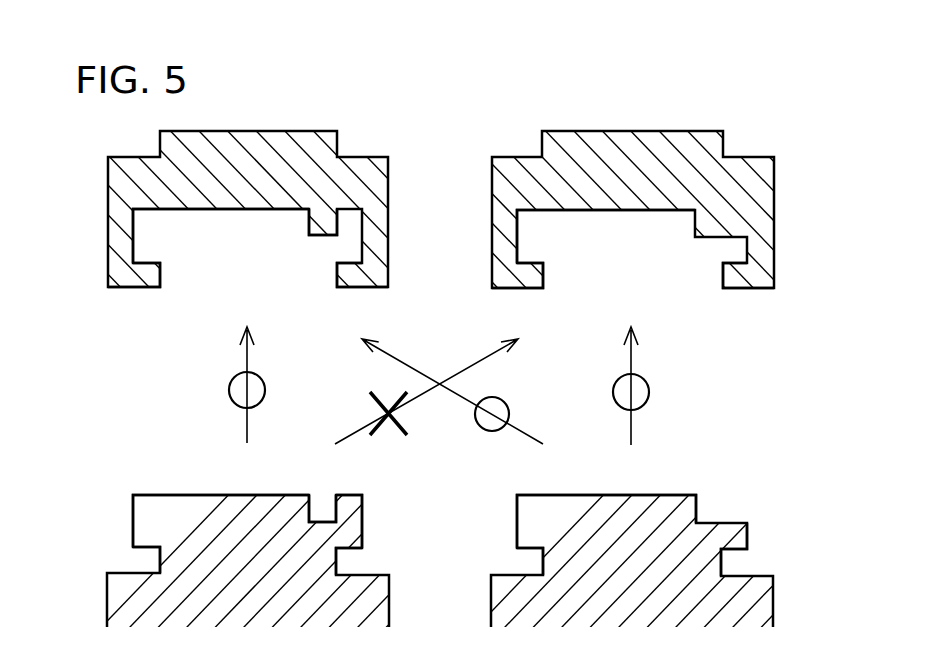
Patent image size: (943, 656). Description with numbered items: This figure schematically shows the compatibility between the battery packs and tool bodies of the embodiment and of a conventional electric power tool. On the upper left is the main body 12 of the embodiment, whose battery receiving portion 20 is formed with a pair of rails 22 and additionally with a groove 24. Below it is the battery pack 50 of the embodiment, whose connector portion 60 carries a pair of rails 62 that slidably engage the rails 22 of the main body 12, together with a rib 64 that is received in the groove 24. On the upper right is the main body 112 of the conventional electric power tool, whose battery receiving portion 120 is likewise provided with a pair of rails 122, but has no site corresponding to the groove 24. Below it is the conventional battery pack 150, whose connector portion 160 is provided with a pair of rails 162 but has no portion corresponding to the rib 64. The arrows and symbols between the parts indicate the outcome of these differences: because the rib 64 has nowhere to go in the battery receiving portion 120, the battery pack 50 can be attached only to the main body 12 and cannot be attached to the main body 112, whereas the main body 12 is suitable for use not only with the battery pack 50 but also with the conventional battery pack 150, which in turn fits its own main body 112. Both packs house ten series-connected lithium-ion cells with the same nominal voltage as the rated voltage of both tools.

The main body 12 is at (338, 137).
The battery receiving portion 20 is at (231, 285).
The pair of rails 22 is at (162, 268).
The groove 24 is at (347, 211).
The battery pack 50 is at (107, 598).
The connector portion 60 is at (212, 503).
The pair of rails 62 is at (133, 518).
The rib 64 is at (350, 495).
The main body 112 is at (723, 139).
The battery receiving portion 120 is at (663, 285).
The pair of rails 122 is at (543, 272).
The battery pack 150 is at (775, 600).
The connector portion 160 is at (670, 507).
The pair of rails 162 is at (517, 537).